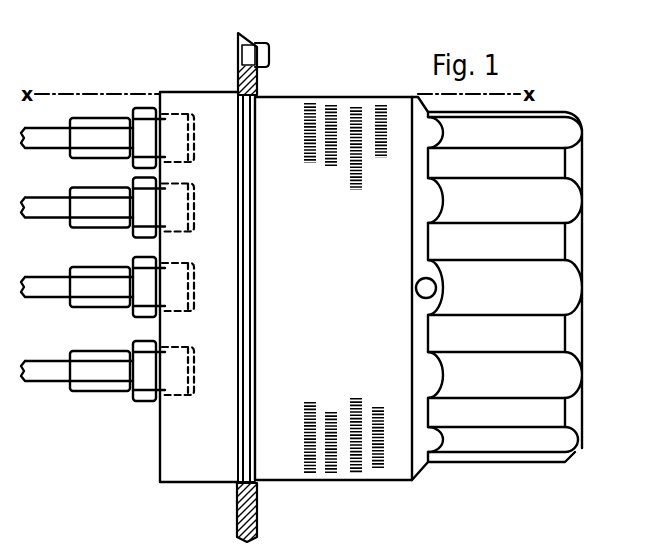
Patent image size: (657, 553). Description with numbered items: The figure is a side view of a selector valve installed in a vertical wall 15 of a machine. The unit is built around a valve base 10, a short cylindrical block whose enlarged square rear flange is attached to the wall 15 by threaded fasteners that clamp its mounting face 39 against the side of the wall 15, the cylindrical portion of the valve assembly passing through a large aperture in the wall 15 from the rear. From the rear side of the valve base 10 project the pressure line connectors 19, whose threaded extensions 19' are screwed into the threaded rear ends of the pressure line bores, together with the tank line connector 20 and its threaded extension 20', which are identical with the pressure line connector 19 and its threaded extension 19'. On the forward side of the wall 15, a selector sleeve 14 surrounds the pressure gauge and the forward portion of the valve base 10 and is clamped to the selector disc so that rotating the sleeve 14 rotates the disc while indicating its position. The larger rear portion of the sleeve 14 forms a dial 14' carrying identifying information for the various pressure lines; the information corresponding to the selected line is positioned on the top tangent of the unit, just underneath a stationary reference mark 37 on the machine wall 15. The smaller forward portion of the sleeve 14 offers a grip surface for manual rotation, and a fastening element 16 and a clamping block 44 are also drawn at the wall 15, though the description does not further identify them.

The valve base 10 is at (182, 458).
The selector sleeve 14 is at (524, 279).
The dial 14' is at (333, 265).
The vertical wall 15 is at (242, 512).
The contact strip field 16 is at (347, 440).
The pressure line connector 19 is at (93, 398).
The threaded extension 19' is at (181, 401).
The tank line connector 20 is at (93, 108).
The threaded extension 20' is at (184, 105).
The stationary reference mark 37 is at (268, 60).
The mounting face 39 is at (228, 476).
The upper clamping block 44 is at (237, 93).